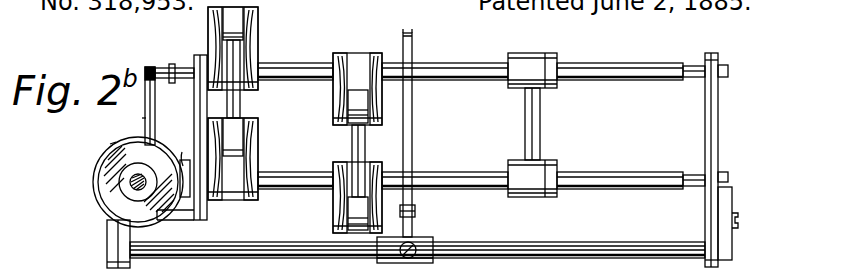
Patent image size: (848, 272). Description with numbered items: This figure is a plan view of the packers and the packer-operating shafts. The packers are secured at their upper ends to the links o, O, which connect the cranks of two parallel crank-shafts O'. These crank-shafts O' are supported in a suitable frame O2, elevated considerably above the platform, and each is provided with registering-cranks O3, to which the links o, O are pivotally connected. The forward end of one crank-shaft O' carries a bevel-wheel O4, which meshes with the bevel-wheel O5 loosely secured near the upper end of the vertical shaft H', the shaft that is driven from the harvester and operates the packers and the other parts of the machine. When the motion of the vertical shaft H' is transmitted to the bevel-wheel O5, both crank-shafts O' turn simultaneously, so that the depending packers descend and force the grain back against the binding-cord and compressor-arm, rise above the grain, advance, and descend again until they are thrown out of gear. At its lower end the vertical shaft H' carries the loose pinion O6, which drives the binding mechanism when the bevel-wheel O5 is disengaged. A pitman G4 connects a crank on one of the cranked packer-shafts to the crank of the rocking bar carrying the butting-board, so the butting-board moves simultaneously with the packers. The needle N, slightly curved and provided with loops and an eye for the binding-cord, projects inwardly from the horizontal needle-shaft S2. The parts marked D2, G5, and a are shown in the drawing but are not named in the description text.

The needle-shaft S2 is at (578, 239).
The end standard D2 is at (719, 120).
The crank-shaft O' is at (481, 126).
The link O is at (233, 103).
The registering-crank O3 is at (258, 24).
The link o is at (451, 142).
The bevel-wheel O4 is at (519, 198).
The needle N is at (405, 146).
The frame O2 is at (196, 113).
The pitman G4 is at (169, 106).
The collar G5 is at (163, 64).
The arm a is at (141, 118).
The vertical shaft H' is at (122, 182).
The bevel-wheel O5 is at (182, 152).
The loose pinion O6 is at (109, 143).